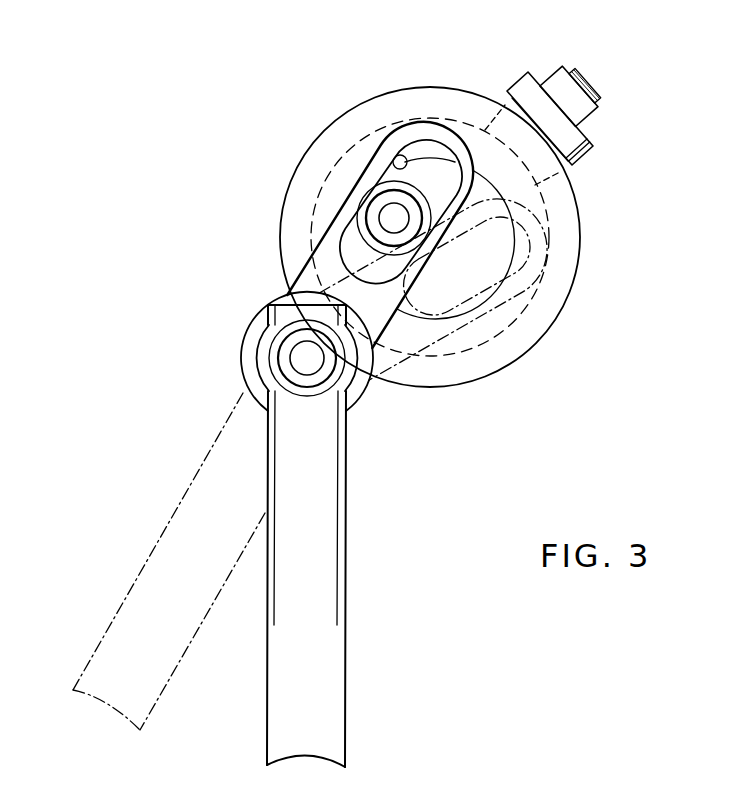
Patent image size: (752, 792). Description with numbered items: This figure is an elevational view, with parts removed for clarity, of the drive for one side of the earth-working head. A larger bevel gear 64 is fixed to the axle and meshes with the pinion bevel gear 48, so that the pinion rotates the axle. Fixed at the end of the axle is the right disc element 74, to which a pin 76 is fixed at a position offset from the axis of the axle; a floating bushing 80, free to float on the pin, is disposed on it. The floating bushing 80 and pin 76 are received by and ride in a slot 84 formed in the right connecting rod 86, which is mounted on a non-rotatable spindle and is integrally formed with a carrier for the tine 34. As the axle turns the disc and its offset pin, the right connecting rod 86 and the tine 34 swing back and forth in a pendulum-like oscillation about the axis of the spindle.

The tine 34 is at (331, 489).
The bevel gear 48 is at (566, 165).
The bevel gear 64 is at (575, 252).
The right disc element 74 is at (400, 357).
The pin 76 is at (393, 217).
The floating bushing 80 is at (314, 226).
The slot 84 is at (400, 160).
The right connecting rod 86 is at (312, 275).